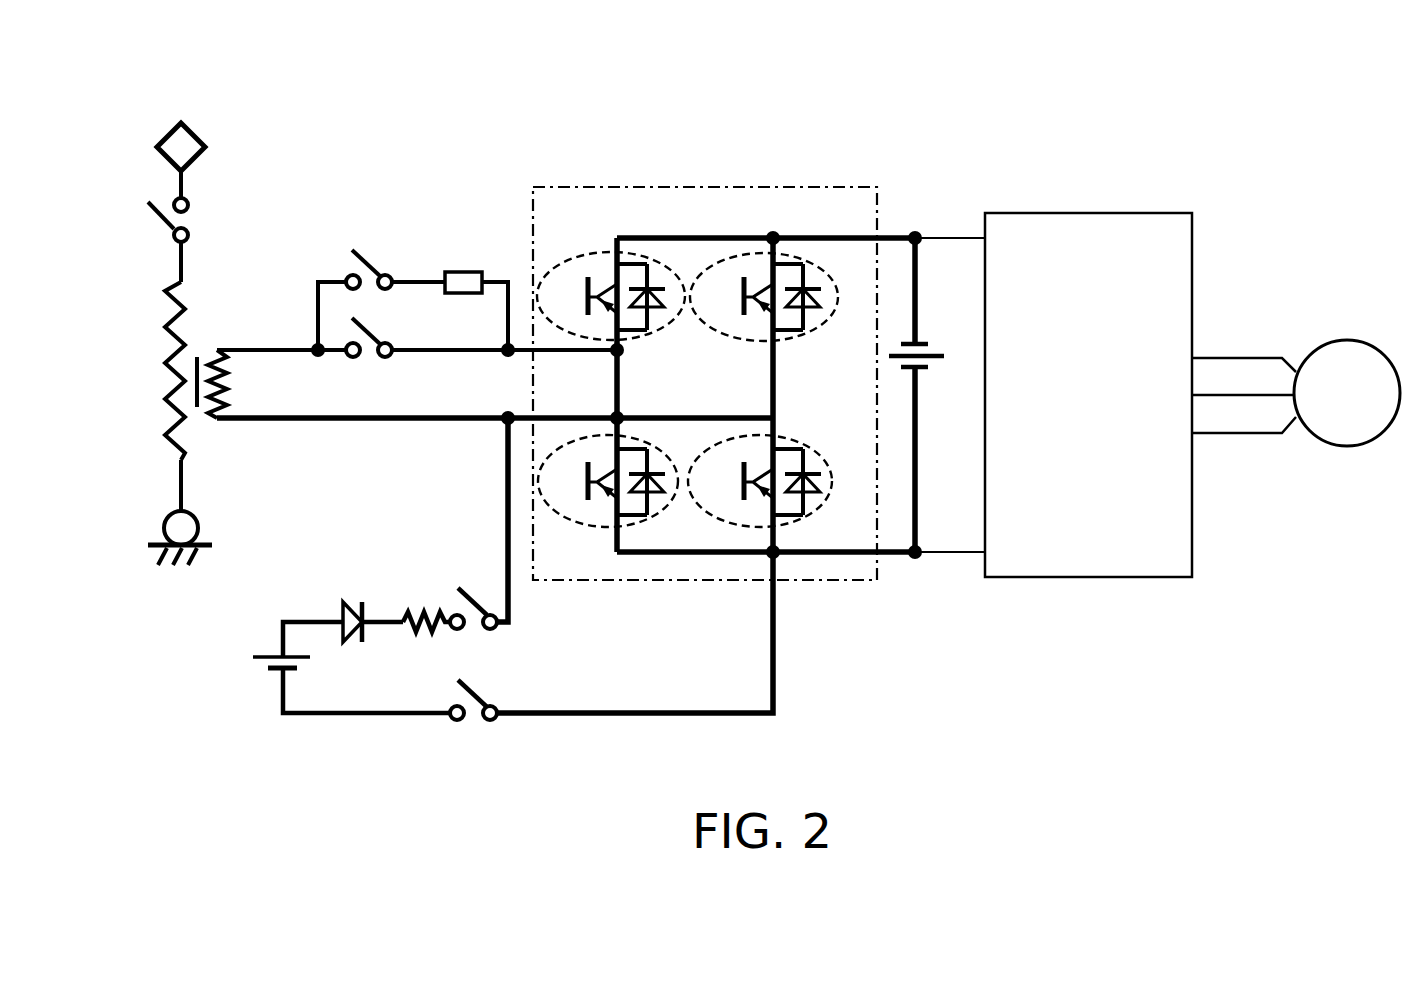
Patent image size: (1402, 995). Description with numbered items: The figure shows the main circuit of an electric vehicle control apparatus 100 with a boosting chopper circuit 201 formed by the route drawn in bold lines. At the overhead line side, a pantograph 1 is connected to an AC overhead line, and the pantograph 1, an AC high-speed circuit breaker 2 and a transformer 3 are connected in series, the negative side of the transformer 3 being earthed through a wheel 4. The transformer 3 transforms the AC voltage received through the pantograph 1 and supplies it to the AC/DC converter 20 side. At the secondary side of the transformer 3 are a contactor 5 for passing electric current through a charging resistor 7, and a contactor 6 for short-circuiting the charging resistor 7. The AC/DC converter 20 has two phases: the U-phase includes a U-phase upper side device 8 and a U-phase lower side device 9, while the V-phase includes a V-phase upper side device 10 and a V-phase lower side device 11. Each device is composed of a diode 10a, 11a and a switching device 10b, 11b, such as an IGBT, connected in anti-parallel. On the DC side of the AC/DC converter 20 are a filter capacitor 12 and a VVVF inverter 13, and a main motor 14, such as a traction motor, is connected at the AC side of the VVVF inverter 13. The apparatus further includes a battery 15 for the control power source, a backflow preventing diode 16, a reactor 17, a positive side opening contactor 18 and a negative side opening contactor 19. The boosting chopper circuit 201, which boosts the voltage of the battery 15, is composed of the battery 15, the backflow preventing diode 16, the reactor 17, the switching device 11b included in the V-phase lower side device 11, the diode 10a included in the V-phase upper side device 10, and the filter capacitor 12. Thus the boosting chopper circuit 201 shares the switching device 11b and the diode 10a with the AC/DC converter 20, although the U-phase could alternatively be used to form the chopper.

The pantograph 1 is at (196, 131).
The AC high-speed circuit breaker 2 is at (157, 222).
The transformer 3 is at (162, 384).
The wheel 4 is at (162, 534).
The contactor 5 is at (366, 251).
The contactor 6 is at (367, 354).
The charging resistor 7 is at (465, 272).
The U-phase upper side device 8 is at (660, 335).
The U-phase lower side device 9 is at (580, 528).
The V-phase upper side device 10 is at (782, 326).
The diode 10a is at (805, 331).
The switching device 10b is at (744, 338).
The V-phase lower side device 11 is at (770, 478).
The diode 11a is at (821, 497).
The switching device 11b is at (721, 504).
The filter capacitor 12 is at (926, 338).
The VVVF inverter 13 is at (1137, 211).
The main motor 14 is at (1351, 338).
The battery 15 is at (270, 675).
The backflow preventing diode 16 is at (341, 606).
The reactor 17 is at (412, 598).
The positive side opening contactor 18 is at (472, 635).
The negative side opening contactor 19 is at (475, 723).
The AC/DC converter 20 is at (836, 187).
The electric vehicle control apparatus 100 is at (1222, 91).
The boosting chopper circuit 201 is at (812, 693).